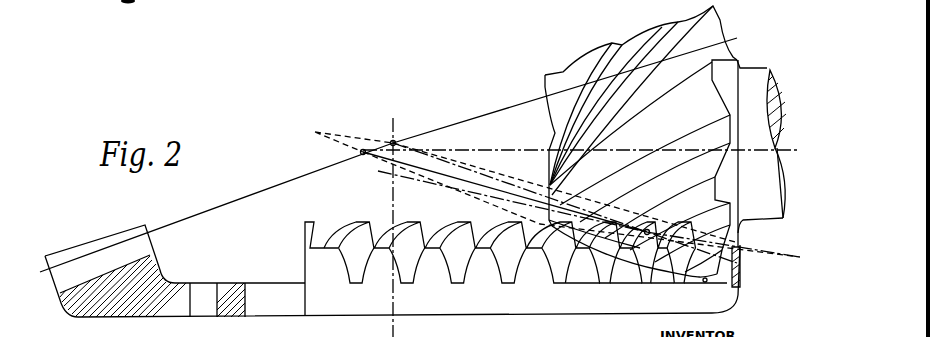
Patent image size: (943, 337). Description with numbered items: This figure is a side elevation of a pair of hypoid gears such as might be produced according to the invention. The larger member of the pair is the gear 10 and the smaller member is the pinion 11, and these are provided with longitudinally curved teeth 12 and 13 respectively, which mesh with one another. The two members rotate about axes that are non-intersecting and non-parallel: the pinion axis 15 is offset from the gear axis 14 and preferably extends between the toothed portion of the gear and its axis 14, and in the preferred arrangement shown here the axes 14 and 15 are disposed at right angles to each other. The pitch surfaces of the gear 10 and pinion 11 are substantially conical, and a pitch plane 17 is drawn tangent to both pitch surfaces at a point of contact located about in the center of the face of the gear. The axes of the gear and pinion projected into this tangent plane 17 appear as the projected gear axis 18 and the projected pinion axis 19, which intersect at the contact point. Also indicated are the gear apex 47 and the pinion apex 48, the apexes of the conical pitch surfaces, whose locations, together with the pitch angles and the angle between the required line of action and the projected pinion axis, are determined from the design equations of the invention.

The gear 10 is at (509, 312).
The pinion 11 is at (740, 62).
The longitudinally curved teeth of the gear 12 is at (495, 265).
The longitudinally curved teeth of the pinion 13 is at (645, 37).
The gear axis 14 is at (392, 198).
The pinion axis 15 is at (782, 150).
The pitch plane 17 is at (354, 131).
The projected gear axis 18 is at (496, 187).
The projected pinion axis 19 is at (500, 193).
The gear apex 47 is at (393, 143).
The pinion apex 48 is at (360, 152).